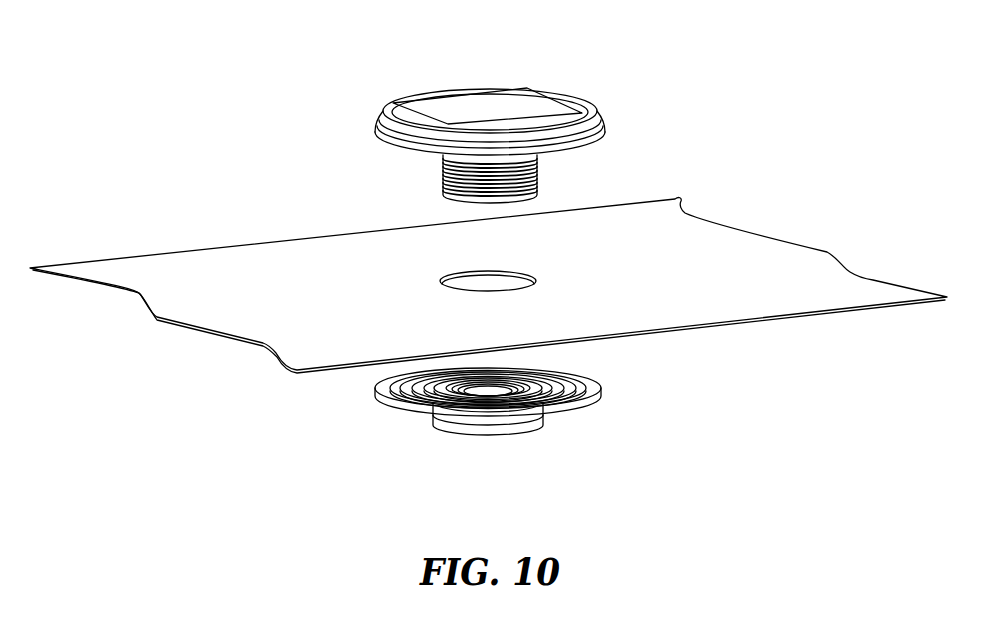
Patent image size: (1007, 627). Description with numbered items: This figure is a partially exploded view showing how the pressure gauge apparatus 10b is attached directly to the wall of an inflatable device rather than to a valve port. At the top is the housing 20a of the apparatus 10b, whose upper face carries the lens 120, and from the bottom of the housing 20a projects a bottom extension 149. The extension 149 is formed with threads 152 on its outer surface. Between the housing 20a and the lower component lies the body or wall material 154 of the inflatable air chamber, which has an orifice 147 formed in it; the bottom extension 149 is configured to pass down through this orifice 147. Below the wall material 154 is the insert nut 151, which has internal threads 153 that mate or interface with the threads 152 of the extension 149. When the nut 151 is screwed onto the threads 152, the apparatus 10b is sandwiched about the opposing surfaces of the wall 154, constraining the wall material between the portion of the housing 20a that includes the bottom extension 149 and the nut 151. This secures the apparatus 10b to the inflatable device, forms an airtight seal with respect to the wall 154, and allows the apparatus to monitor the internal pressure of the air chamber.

The pressure gauge apparatus 10b is at (323, 73).
The housing 20a is at (370, 132).
The lens 120 is at (502, 105).
The extension 149 is at (435, 180).
The threads 152 is at (537, 174).
The wall material 154 is at (688, 217).
The orifice 147 is at (535, 282).
The insert nut 151 is at (600, 390).
The threads 153 is at (517, 390).